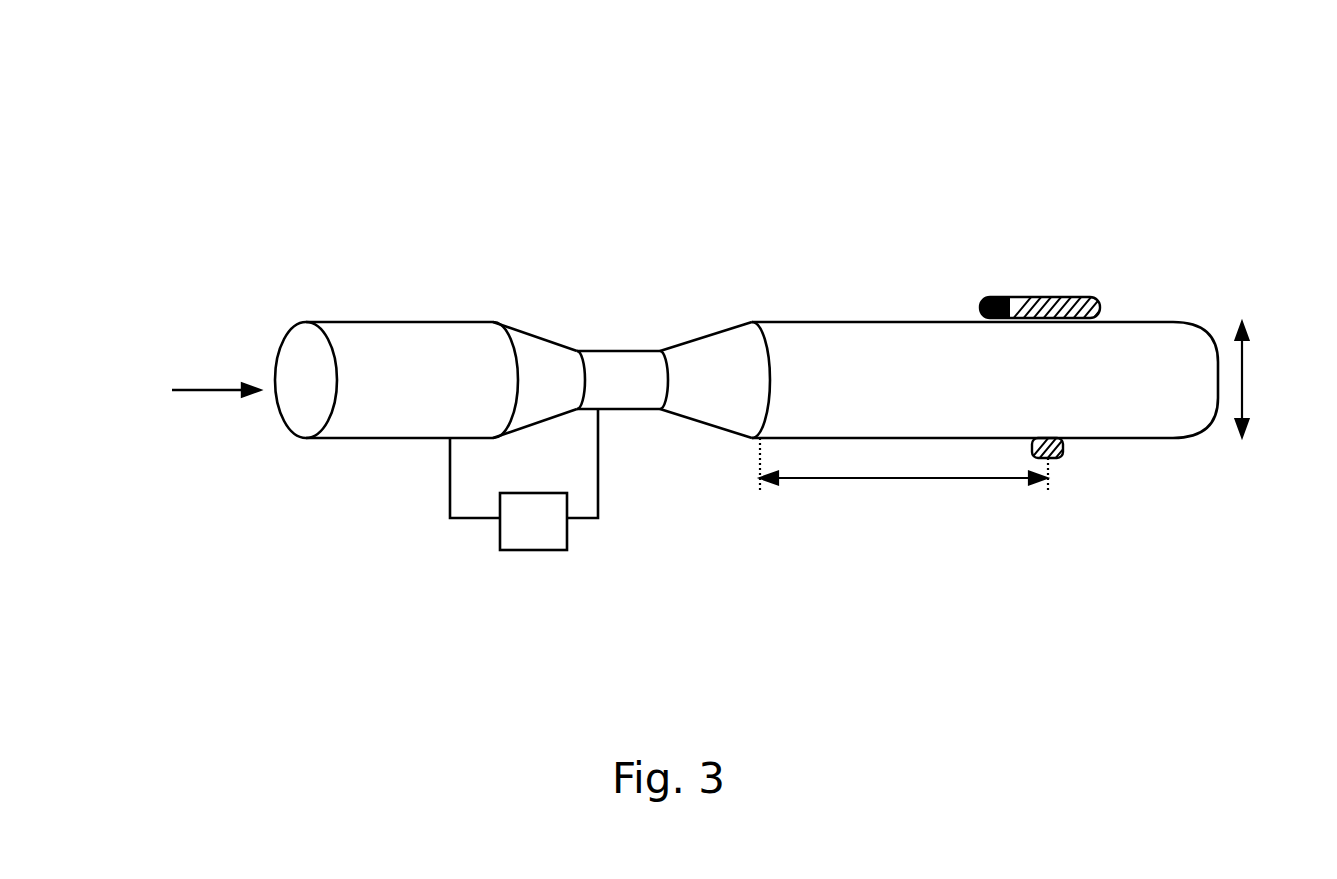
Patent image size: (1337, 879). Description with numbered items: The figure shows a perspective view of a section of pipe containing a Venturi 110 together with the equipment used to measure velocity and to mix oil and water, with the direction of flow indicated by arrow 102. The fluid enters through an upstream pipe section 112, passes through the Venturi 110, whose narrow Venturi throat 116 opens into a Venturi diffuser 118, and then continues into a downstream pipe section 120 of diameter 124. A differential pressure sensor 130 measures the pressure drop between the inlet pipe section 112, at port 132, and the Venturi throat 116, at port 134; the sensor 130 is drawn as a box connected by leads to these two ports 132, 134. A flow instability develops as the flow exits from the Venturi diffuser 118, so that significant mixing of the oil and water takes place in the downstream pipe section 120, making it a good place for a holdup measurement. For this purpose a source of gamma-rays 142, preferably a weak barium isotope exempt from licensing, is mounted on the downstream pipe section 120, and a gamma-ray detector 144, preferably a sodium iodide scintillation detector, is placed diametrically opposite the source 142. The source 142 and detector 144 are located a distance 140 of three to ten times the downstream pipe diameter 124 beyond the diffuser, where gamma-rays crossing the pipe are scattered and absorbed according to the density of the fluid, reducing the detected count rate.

The arrow indicating direction of flow 102 is at (167, 414).
The Venturi 110 is at (556, 131).
The pipe section 112 is at (366, 301).
The Venturi throat 116 is at (590, 332).
The Venturi diffuser 118 is at (694, 305).
The pipe section 120 is at (886, 264).
The diameter 124 is at (1287, 379).
The differential pressure sensor 130 is at (547, 570).
The port 132 is at (438, 456).
The port 134 is at (614, 428).
The distance 3-10 d 140 is at (904, 499).
The source of gamma-rays 142 is at (1080, 482).
The gamma-ray detector 144 is at (1031, 272).